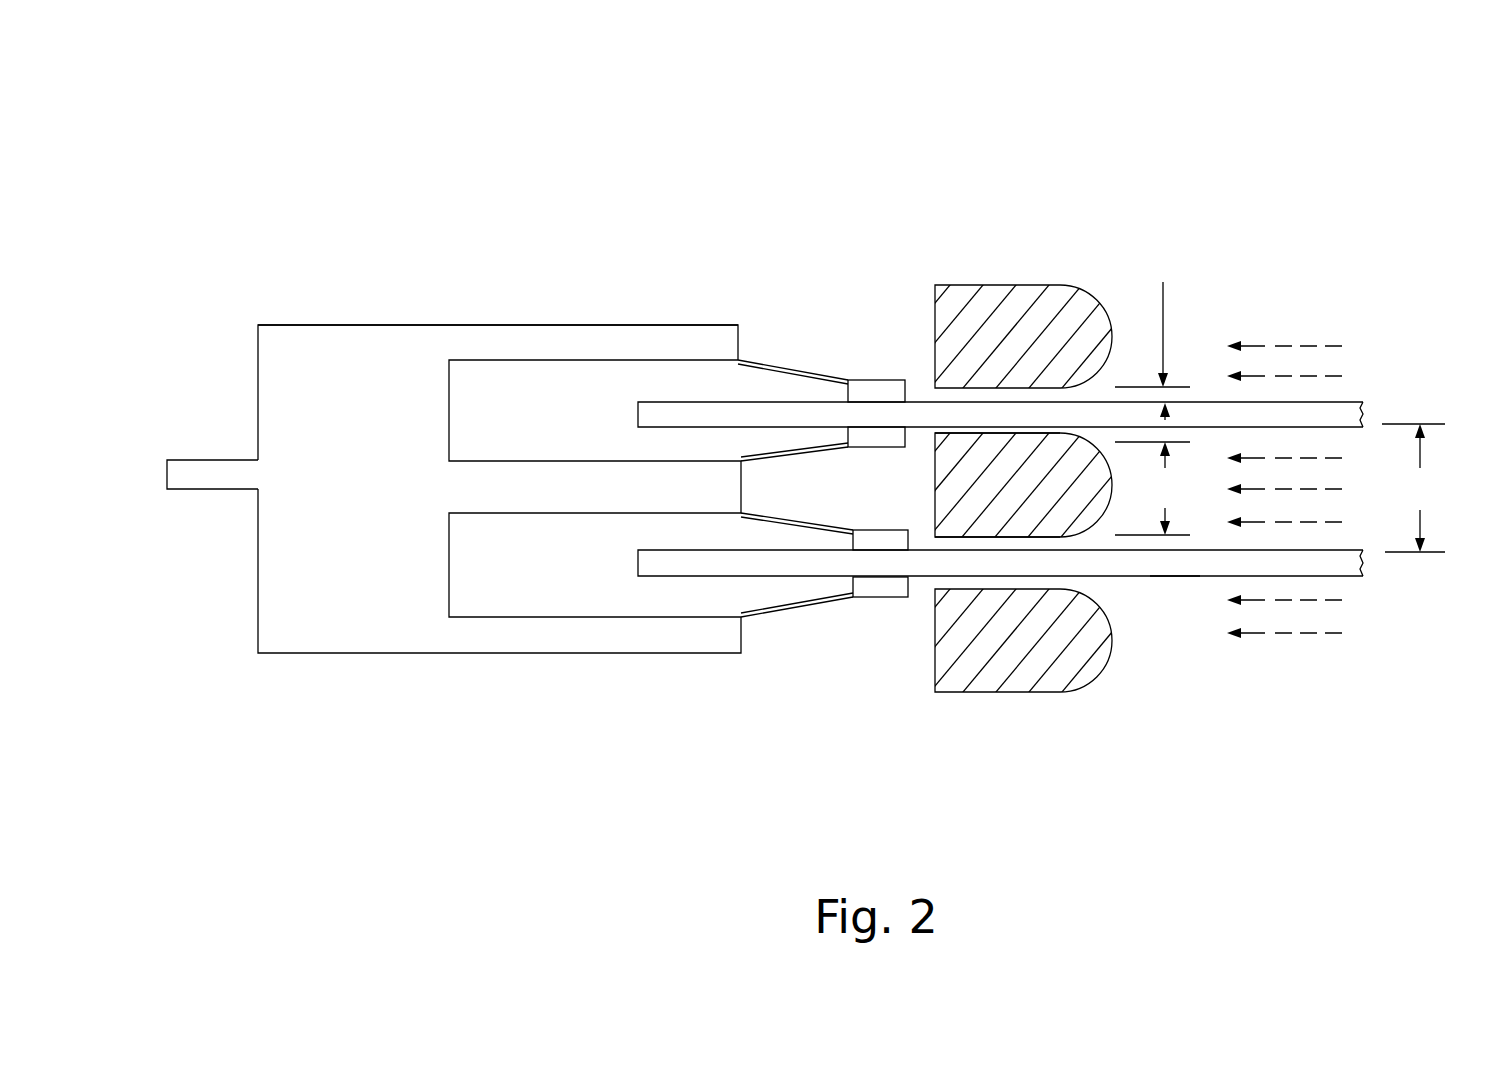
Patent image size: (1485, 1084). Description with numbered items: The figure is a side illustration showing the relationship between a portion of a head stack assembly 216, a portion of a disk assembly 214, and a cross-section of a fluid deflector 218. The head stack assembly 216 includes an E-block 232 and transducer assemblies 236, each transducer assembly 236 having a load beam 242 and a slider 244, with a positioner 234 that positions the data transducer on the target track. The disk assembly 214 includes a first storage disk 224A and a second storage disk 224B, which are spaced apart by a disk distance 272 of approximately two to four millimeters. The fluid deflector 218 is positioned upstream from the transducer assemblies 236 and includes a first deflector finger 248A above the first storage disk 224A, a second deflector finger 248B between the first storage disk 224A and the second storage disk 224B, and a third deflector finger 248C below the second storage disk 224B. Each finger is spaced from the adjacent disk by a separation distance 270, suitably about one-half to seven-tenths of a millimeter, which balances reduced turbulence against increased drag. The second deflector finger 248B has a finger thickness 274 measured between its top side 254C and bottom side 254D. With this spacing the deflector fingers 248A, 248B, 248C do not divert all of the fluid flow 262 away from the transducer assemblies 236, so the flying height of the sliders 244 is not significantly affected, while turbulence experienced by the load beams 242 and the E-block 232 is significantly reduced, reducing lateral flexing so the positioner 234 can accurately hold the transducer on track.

The head stack assembly 216 is at (347, 310).
The E-block 232 is at (600, 333).
The positioner 234 is at (185, 445).
The transducer assembly 236 is at (771, 345).
The load beam 242 is at (797, 368).
The slider 244 is at (876, 380).
The first storage disk 224A is at (677, 407).
The second storage disk 224B is at (662, 565).
The fluid deflector 218 is at (1020, 475).
The first deflector finger 248A is at (1068, 307).
The second deflector finger 248B is at (958, 515).
The third deflector finger 248C is at (968, 668).
The top side 254C is at (978, 433).
The bottom side 254D is at (980, 533).
The fluid flow 262 is at (1282, 345).
The separation distance 270 is at (1163, 282).
The finger thickness 274 is at (1154, 488).
The disk distance 272 is at (1416, 488).
The disk assembly 214 is at (1170, 592).